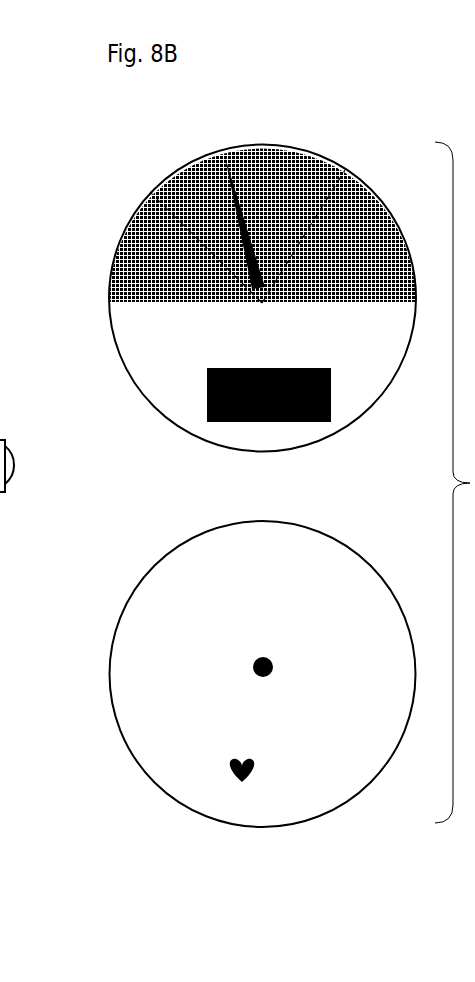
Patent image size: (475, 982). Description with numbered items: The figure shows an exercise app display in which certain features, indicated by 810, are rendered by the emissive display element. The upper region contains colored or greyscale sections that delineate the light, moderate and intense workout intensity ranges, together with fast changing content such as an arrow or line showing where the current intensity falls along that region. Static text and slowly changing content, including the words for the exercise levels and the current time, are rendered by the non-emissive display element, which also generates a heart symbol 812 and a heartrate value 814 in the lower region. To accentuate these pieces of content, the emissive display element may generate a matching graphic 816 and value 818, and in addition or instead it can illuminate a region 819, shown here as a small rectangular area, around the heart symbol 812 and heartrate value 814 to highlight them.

The emissive display element rendering 810 is at (297, 98).
The heart symbol 812 is at (239, 790).
The heartrate value 814 is at (286, 792).
The graphic 816 is at (242, 421).
The value 818 is at (293, 420).
The highlight region 819 is at (225, 447).